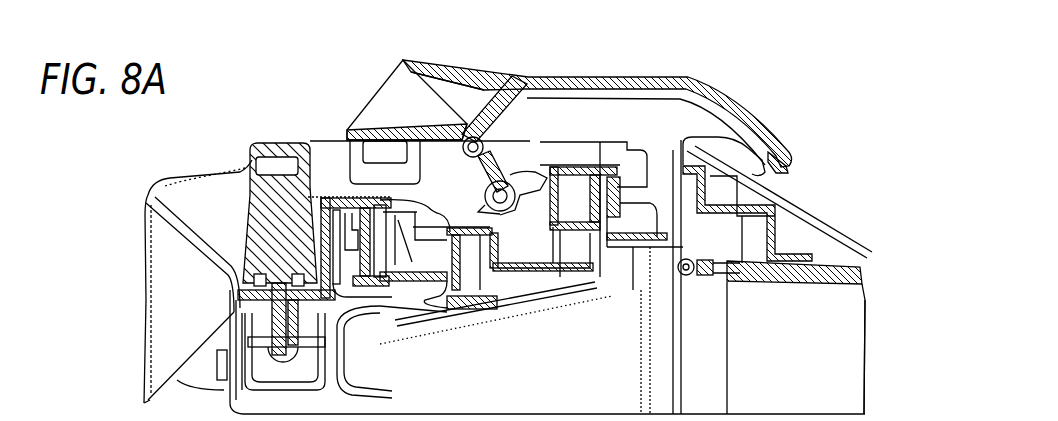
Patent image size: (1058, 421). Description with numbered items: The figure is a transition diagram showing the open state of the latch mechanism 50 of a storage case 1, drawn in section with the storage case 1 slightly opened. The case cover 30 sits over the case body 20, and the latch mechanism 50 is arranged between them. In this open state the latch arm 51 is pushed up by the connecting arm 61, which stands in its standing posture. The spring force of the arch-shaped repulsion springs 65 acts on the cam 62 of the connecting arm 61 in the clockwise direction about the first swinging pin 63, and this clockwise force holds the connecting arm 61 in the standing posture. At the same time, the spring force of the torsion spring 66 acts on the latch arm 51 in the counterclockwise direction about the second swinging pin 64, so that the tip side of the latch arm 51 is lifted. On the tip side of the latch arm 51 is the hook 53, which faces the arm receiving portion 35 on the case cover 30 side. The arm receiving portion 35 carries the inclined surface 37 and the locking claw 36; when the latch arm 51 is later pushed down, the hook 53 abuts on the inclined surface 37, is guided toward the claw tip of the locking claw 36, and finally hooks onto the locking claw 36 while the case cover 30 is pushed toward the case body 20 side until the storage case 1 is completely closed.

The storage case 1 is at (826, 158).
The case body 20 is at (283, 135).
The case cover 30 is at (872, 225).
The arm receiving portion 35 is at (745, 155).
The locking claw 36 is at (815, 210).
The inclined surface 37 is at (785, 192).
The latch mechanism 50 is at (555, 78).
The latch arm 51 is at (630, 78).
The hook 53 is at (795, 162).
The connecting arm 61 is at (497, 145).
The cam 62 is at (485, 193).
The first swinging pin 63 is at (527, 182).
The second swinging pin 64 is at (455, 123).
The repulsion springs 65 is at (512, 240).
The torsion spring 66 is at (458, 150).